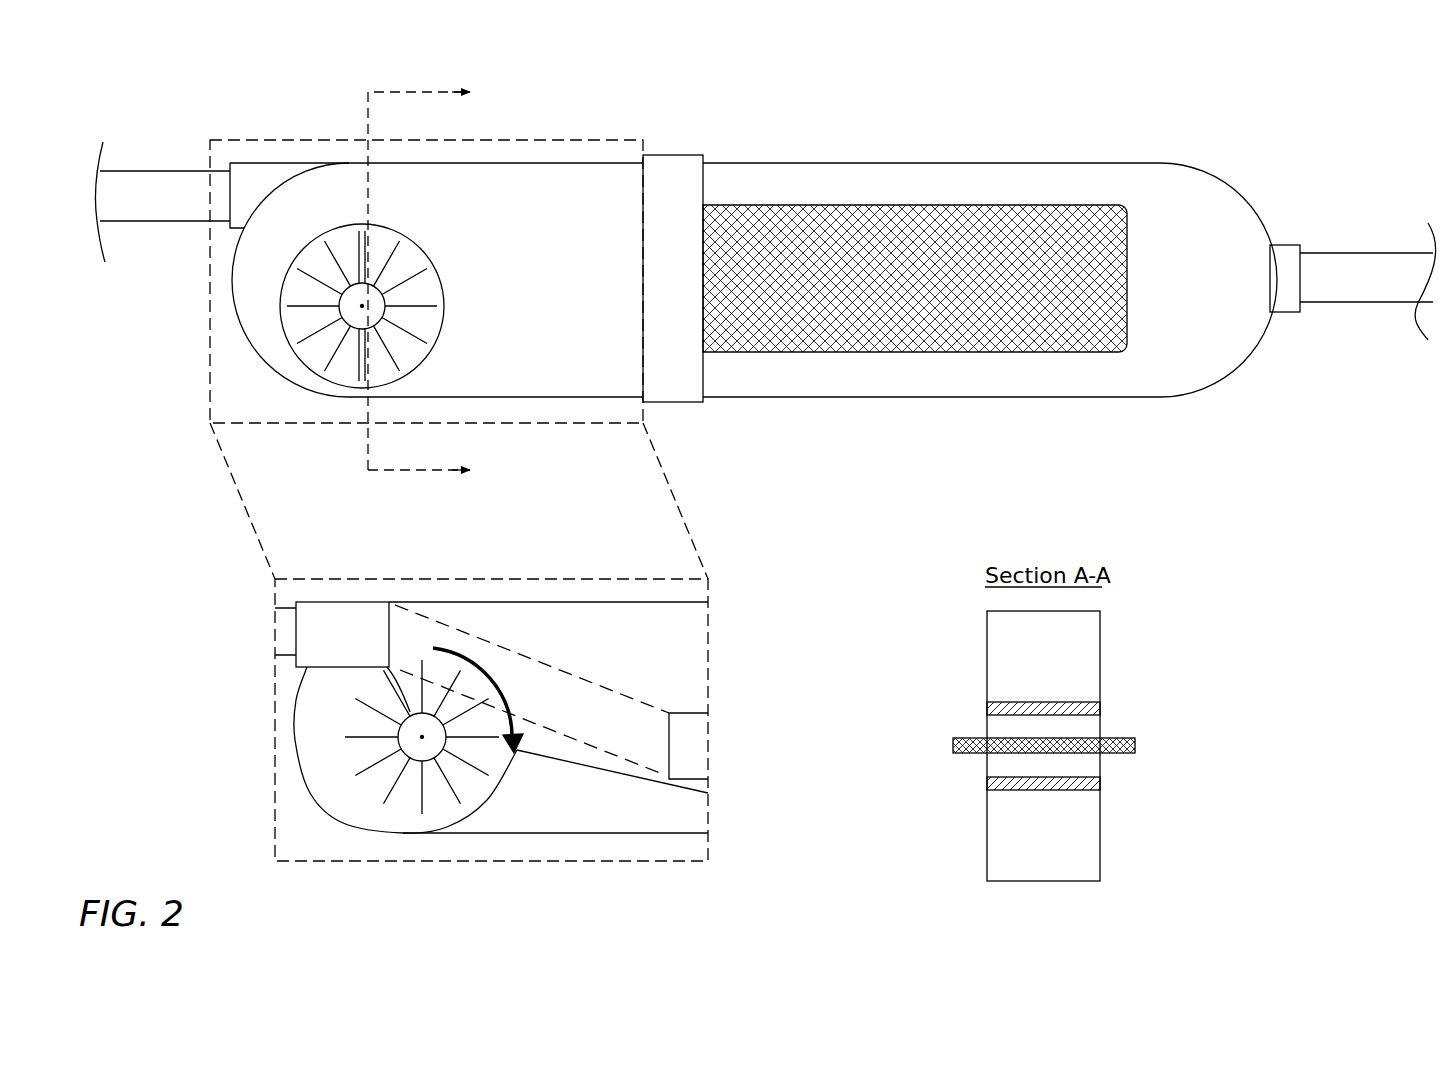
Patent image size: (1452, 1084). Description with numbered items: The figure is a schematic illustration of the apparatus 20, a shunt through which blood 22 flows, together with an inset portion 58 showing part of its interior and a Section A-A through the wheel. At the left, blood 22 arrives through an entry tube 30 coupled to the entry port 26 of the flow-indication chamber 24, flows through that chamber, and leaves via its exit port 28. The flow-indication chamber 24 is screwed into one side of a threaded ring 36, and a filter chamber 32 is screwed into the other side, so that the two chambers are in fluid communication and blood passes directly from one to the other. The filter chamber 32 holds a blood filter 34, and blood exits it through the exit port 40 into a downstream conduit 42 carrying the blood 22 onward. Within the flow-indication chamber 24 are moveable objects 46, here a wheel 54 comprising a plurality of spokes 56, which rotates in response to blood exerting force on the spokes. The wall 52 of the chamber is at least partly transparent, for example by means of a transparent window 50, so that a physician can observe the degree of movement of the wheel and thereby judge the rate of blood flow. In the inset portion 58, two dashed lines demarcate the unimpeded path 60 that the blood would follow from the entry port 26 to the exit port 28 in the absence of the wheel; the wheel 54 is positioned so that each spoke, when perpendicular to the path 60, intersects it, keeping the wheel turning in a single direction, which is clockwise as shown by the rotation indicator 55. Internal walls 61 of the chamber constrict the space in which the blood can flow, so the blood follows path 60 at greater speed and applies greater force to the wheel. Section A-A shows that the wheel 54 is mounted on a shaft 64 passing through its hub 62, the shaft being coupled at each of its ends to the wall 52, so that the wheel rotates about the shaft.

The apparatus 20 is at (178, 108).
The blood 22 is at (176, 209).
The flow-indication chamber 24 is at (595, 397).
The entry port 26 is at (258, 163).
The exit port 28 is at (699, 724).
The entry tube 30 is at (127, 221).
The filter chamber 32 is at (1218, 178).
The blood filter 34 is at (1128, 273).
The threaded ring 36 is at (668, 405).
The exit port 40 is at (1290, 245).
The outlet end 42 is at (1367, 303).
The moveable objects 46 is at (431, 527).
The transparent window 50 is at (280, 322).
The wall 52 is at (574, 192).
The wheel 54 is at (404, 347).
The rotation indicator 55 is at (516, 707).
The spokes 56 is at (405, 245).
The inset portion 58 is at (272, 790).
The unimpeded path 60 is at (646, 745).
The internal walls 61 is at (548, 762).
The hub 62 is at (357, 233).
The shaft 64 is at (362, 306).